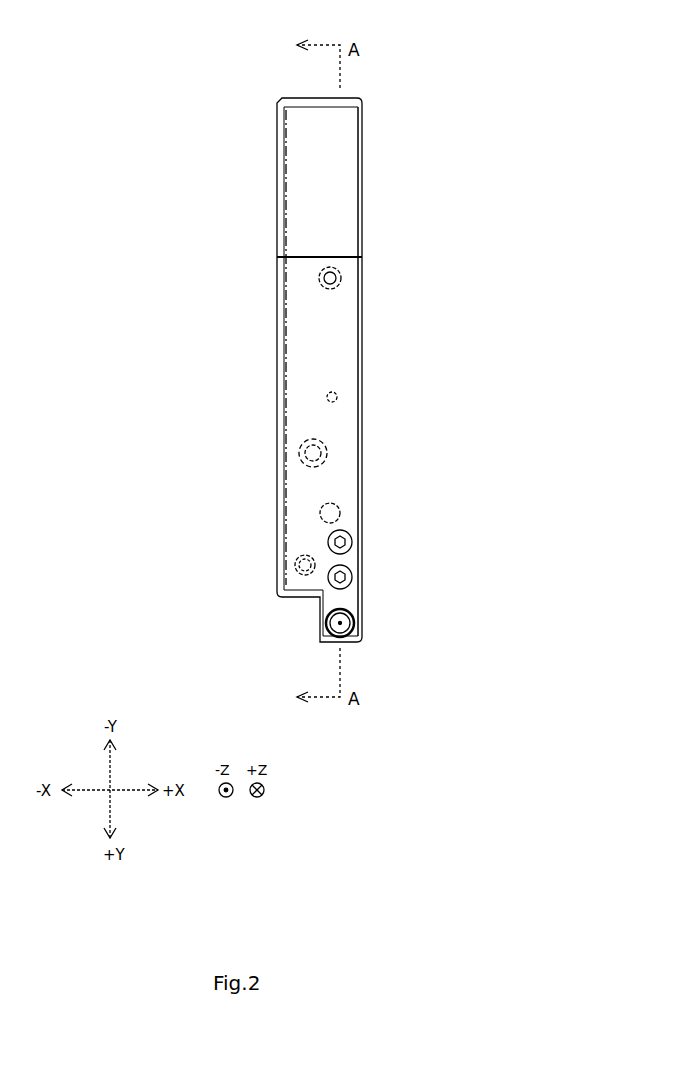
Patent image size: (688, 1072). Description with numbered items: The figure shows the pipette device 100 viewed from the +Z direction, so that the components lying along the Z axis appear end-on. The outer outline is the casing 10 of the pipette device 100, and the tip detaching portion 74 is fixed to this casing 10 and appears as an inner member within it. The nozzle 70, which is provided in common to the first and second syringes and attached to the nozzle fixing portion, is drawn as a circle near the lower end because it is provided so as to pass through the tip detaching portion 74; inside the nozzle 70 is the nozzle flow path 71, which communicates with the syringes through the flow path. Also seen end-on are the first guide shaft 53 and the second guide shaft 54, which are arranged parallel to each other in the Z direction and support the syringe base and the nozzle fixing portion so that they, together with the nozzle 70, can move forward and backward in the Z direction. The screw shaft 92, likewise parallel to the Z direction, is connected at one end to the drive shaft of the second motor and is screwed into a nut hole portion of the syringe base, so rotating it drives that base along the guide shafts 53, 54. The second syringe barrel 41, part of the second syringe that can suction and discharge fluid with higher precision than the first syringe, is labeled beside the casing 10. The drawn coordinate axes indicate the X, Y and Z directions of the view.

The pipette device 100 is at (412, 66).
The casing 10 is at (277, 172).
The second syringe barrel 41 is at (431, 371).
The tip detaching portion 74 is at (296, 336).
The first guide shaft 53 is at (341, 275).
The screw shaft 92 is at (327, 450).
The second guide shaft 54 is at (296, 568).
The nozzle 70 is at (326, 635).
The nozzle flow path 71 is at (342, 623).